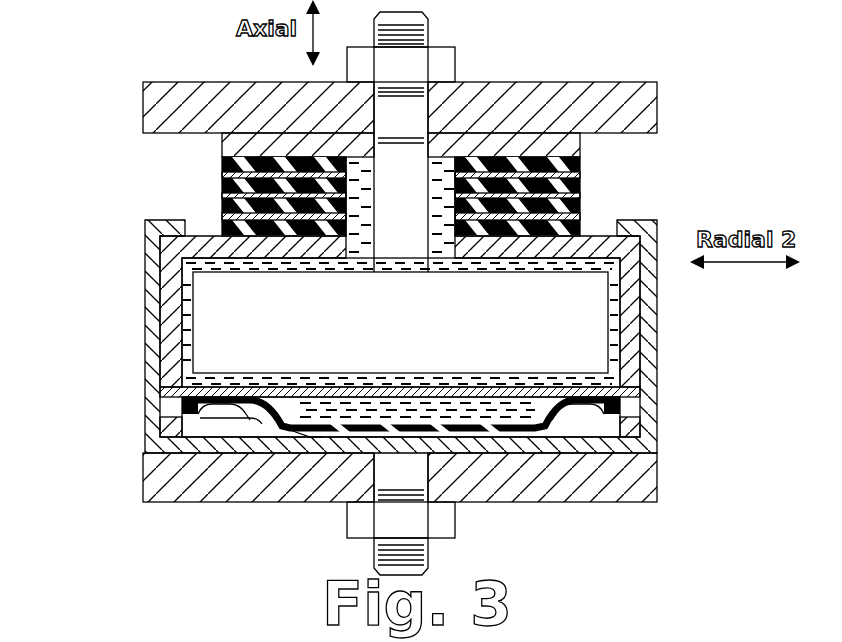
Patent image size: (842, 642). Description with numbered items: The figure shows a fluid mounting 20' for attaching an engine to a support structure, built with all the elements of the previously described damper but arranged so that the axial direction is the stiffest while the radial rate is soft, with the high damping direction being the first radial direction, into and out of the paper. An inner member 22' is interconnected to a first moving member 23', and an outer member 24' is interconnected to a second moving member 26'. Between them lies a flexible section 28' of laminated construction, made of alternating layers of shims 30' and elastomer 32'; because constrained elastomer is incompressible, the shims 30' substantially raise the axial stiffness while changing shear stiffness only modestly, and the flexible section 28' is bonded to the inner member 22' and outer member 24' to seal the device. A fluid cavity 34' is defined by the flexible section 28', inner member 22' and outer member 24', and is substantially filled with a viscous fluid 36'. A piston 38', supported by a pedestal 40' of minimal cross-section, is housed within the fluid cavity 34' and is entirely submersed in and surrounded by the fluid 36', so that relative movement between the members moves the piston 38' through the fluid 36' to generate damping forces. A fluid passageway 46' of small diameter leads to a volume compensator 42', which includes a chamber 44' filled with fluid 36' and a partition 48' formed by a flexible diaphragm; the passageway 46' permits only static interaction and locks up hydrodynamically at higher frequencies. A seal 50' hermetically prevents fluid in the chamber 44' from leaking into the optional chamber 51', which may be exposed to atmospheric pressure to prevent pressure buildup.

The fluid mounting 20' is at (569, 293).
The inner member 22' is at (474, 149).
The first moving member 23' is at (448, 107).
The outer member 24' is at (465, 336).
The second moving member 26' is at (455, 477).
The flexible section 28' is at (407, 190).
The shims 30' is at (335, 190).
The elastomer 32' is at (334, 196).
The fluid cavity 34' is at (335, 297).
The fluid 36' is at (477, 326).
The piston 38' is at (400, 322).
The pedestal 40' is at (401, 292).
The volume compensator 42' is at (401, 482).
The chamber 44' is at (401, 417).
The fluid passageway 46' is at (400, 368).
The partition 48' is at (272, 481).
The seal 50' is at (317, 411).
The chamber 51' is at (195, 475).